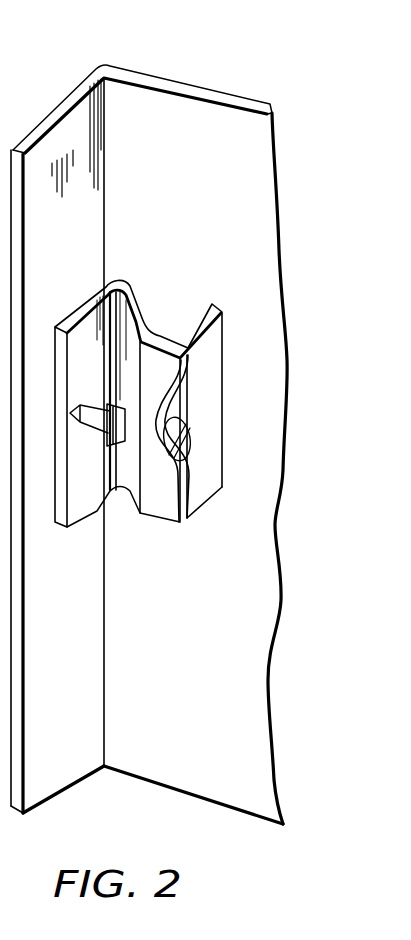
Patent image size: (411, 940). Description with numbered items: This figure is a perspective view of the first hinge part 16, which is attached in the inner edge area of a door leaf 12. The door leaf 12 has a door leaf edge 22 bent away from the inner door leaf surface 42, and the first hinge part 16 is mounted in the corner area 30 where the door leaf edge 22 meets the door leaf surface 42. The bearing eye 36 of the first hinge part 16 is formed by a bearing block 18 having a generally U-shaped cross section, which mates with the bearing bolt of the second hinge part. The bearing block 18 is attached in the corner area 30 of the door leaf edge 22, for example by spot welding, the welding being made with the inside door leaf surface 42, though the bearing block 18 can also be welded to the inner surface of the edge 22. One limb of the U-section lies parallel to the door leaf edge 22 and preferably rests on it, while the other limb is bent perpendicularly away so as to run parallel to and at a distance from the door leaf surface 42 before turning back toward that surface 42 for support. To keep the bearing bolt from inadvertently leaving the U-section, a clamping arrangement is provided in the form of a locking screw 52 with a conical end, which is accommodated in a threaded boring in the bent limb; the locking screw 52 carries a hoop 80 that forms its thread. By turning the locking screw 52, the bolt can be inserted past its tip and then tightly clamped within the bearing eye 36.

The door leaf 12 is at (158, 66).
The door leaf surface 42 is at (228, 124).
The corner area 30 is at (105, 221).
The door leaf edge 22 is at (43, 762).
The first hinge part 16 is at (225, 322).
The bearing block 18 is at (198, 490).
The hoop 80 is at (168, 374).
The locking screw 52 is at (182, 453).
The bearing eye 36 is at (99, 465).